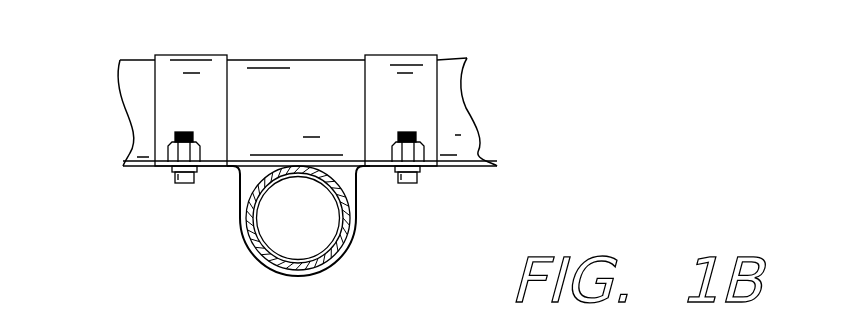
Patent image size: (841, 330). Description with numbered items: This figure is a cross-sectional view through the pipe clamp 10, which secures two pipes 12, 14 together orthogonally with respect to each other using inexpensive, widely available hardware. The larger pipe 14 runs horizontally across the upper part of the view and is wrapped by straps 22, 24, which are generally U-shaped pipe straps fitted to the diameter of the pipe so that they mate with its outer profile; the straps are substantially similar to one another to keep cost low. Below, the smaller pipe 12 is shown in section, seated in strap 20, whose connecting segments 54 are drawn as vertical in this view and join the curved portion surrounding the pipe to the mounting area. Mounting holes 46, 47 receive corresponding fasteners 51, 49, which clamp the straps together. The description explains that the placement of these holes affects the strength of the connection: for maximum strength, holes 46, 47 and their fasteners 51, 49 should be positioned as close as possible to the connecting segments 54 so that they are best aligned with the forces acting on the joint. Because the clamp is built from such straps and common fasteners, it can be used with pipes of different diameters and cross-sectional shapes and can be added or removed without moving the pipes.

The pipe clamp 10 is at (550, 82).
The pipe 12 is at (325, 268).
The pipe 14 is at (450, 118).
The strap 20 is at (357, 190).
The strap 22 is at (167, 100).
The strap 24 is at (440, 78).
The mounting hole 46 is at (166, 173).
The mounting hole 47 is at (442, 173).
The fastener 49 is at (497, 166).
The fastener 51 is at (180, 133).
The connecting segment 54 is at (238, 181).